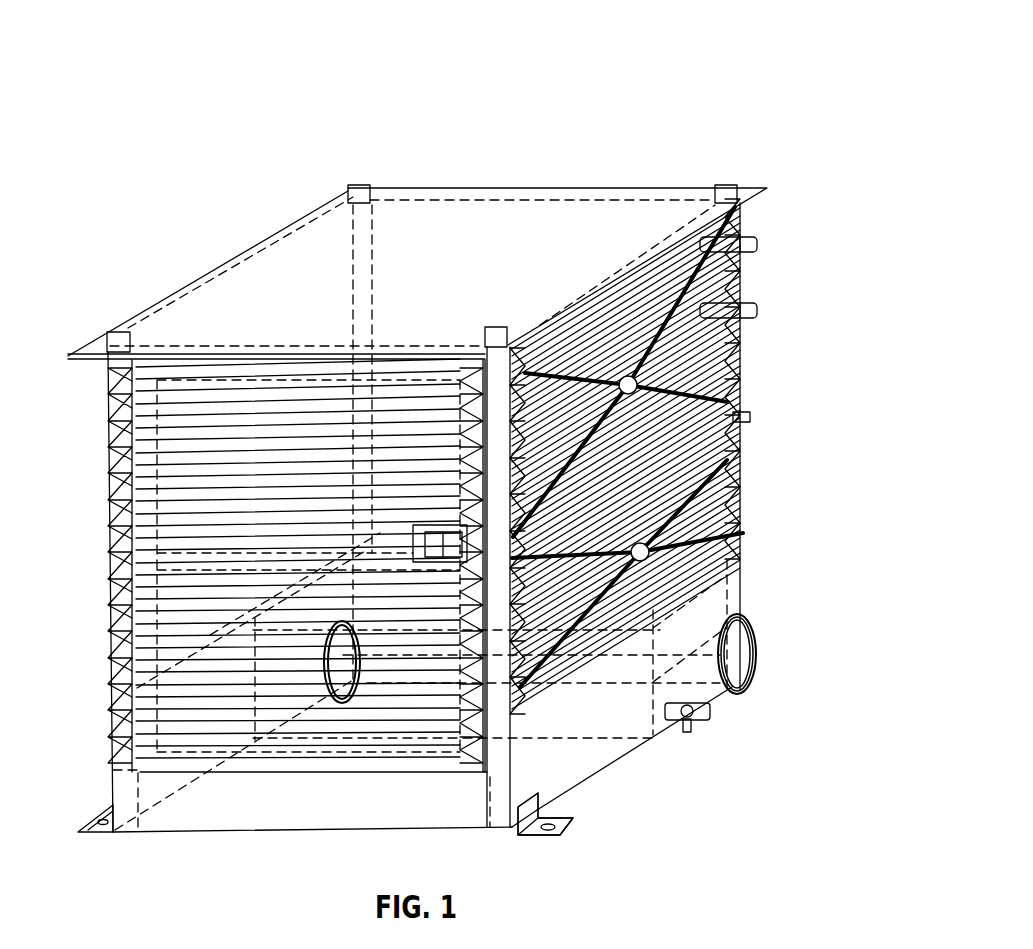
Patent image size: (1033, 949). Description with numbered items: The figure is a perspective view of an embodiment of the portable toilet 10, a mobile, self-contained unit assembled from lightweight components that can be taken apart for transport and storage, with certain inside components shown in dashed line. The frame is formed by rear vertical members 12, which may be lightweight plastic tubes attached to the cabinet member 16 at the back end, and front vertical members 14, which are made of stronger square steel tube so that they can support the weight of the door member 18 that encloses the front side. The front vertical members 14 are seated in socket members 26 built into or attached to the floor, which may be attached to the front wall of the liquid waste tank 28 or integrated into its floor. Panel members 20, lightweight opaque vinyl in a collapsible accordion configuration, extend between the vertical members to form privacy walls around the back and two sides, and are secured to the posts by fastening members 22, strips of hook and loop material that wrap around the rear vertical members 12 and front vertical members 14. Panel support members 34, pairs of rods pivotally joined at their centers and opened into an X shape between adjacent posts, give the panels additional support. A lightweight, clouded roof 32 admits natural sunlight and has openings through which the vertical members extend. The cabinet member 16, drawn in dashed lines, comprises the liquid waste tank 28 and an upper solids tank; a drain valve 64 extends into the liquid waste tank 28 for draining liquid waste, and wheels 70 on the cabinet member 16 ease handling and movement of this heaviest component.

The portable toilet 10 is at (692, 40).
The rear vertical members 12 is at (370, 206).
The front vertical members 14 is at (107, 408).
The cabinet member 16 is at (262, 632).
The door member 18 is at (165, 495).
The panel members 20 is at (305, 314).
The fastening members 22 is at (758, 313).
The socket members 26 is at (95, 828).
The liquid waste tank 28 is at (593, 717).
The roof 32 is at (590, 216).
The panel support members 34 is at (690, 330).
The drain valve 64 is at (713, 712).
The wheels 70 is at (757, 653).